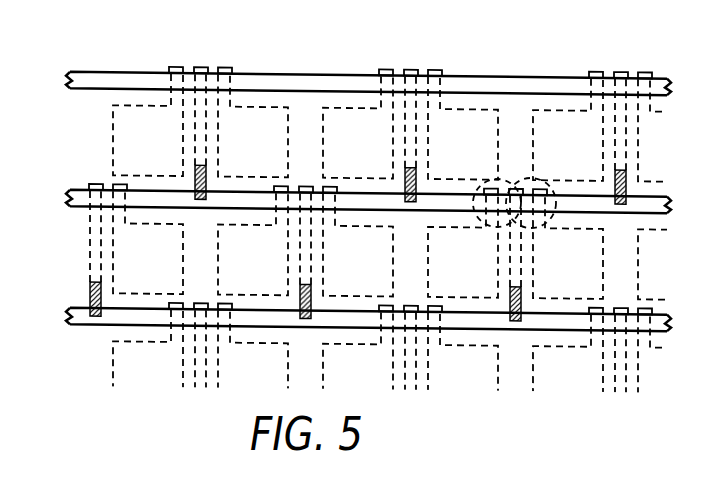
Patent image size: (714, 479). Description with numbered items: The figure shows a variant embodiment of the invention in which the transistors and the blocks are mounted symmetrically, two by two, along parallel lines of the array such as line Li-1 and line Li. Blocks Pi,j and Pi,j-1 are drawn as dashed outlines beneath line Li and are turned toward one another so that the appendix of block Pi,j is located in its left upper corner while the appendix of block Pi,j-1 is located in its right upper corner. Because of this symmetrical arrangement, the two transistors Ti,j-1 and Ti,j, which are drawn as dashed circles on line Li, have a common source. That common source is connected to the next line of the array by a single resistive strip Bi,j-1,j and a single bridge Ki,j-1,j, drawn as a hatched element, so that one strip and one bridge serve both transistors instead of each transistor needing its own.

The line Li-1 is at (349, 66).
The line Li is at (349, 195).
The transistor Ti,j-1 is at (508, 168).
The transistor Ti,j is at (522, 167).
The block Pi,j-1 is at (463, 243).
The block Pi,j is at (568, 244).
The bridge Ki,j-1,j is at (508, 305).
The resistive strip Bi,j-1,j is at (520, 266).